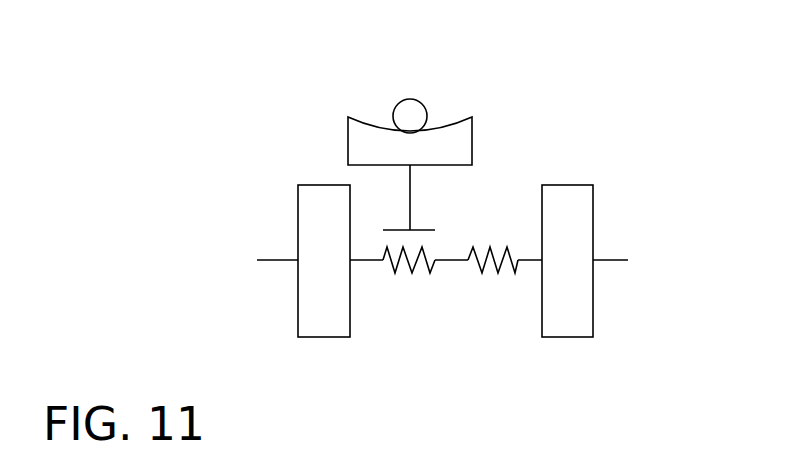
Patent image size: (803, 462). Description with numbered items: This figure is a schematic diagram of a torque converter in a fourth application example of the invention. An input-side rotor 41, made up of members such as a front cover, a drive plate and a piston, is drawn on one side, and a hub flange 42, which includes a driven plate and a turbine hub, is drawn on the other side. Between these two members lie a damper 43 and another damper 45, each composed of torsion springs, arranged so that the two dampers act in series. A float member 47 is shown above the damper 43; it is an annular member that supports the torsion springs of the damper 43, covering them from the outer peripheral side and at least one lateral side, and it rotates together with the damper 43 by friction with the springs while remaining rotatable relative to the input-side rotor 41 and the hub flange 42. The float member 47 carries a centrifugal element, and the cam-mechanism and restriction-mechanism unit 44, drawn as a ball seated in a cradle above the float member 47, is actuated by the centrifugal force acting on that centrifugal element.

The input-side rotor 41 is at (306, 209).
The hub flange 42 is at (582, 318).
The damper 43 is at (403, 277).
The cam-mechanism and restriction-mechanism unit 44 is at (383, 108).
The damper 45 is at (488, 278).
The float member 47 is at (427, 230).